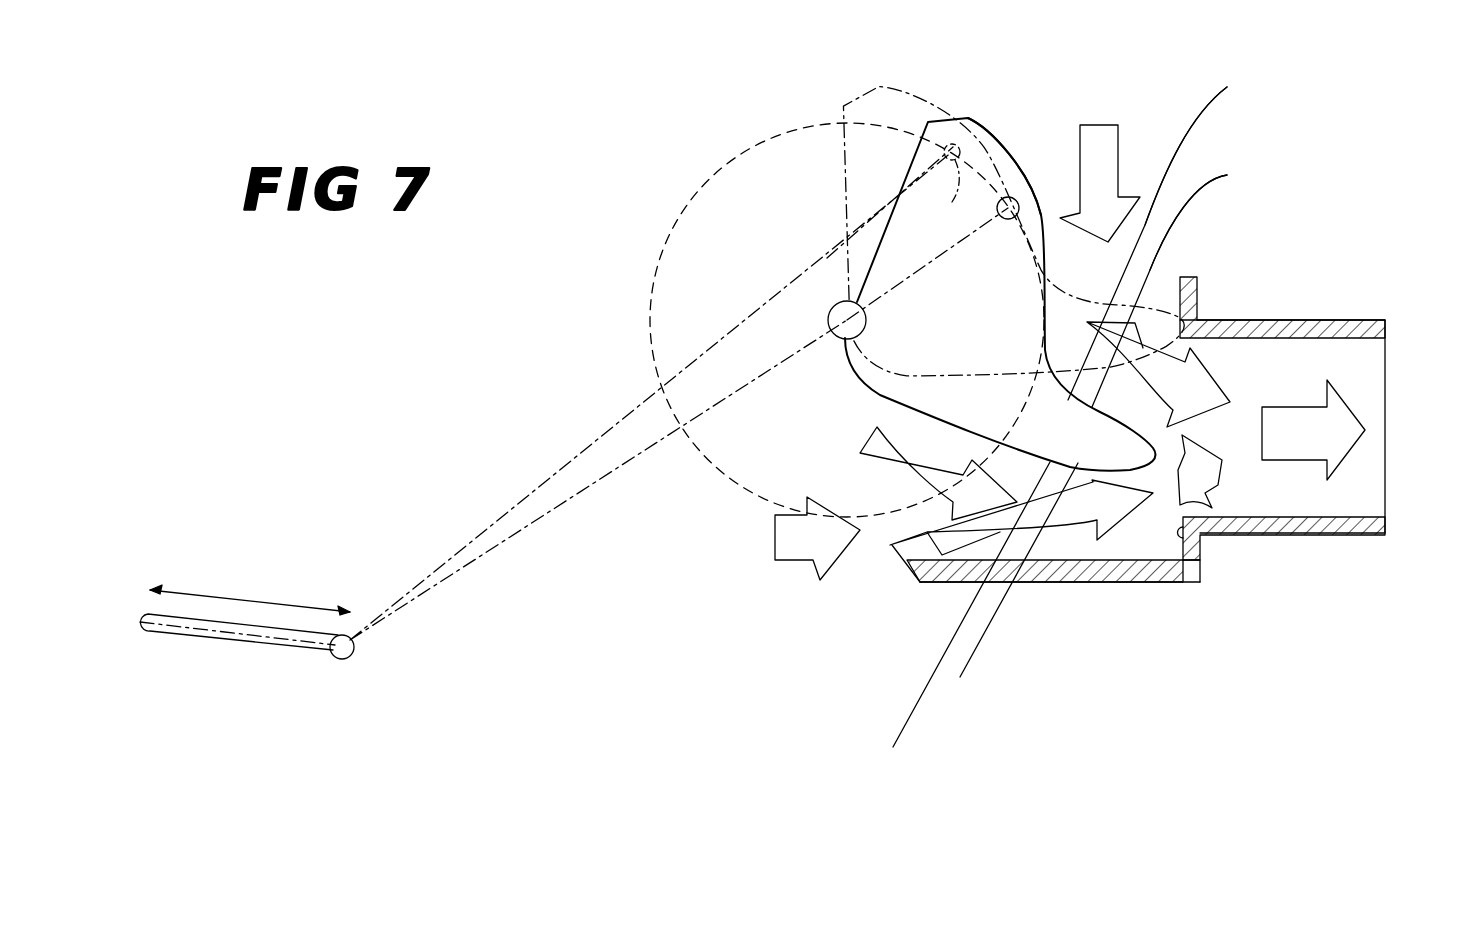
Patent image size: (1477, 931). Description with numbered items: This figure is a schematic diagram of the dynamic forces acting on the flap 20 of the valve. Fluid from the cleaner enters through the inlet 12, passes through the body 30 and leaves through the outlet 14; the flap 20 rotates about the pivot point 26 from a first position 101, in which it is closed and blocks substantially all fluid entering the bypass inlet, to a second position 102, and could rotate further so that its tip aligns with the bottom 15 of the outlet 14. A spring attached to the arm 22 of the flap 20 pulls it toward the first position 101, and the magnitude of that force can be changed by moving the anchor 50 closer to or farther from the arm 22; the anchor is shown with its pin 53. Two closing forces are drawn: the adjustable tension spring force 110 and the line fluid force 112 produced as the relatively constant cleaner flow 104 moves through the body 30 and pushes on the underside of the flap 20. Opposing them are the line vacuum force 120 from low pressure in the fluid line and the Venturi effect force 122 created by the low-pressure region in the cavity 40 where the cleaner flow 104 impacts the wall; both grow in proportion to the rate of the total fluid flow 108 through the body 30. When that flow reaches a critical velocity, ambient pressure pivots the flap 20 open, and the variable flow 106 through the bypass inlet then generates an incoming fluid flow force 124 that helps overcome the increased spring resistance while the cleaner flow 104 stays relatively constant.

The inlet 12 is at (1205, 555).
The outlet 14 is at (1392, 372).
The bottom of the outlet 15 is at (1345, 537).
The flap 20 is at (952, 115).
The arm 22 is at (998, 206).
The pivot point 26 is at (862, 332).
The body 30 is at (918, 583).
The cavity 40 is at (1087, 547).
The anchor 50 is at (285, 625).
The link rod pin 53 is at (348, 655).
The first position 101 is at (875, 92).
The second position 102 is at (950, 113).
The cleaner flow 104 is at (787, 536).
The variable flow 106 is at (1090, 163).
The total fluid flow 108 is at (1313, 420).
The tension spring force 110 is at (893, 747).
The line fluid force 112 is at (960, 677).
The line vacuum force 120 is at (1216, 142).
The Venturi effect force 122 is at (1158, 317).
The incoming fluid flow force 124 is at (1219, 210).